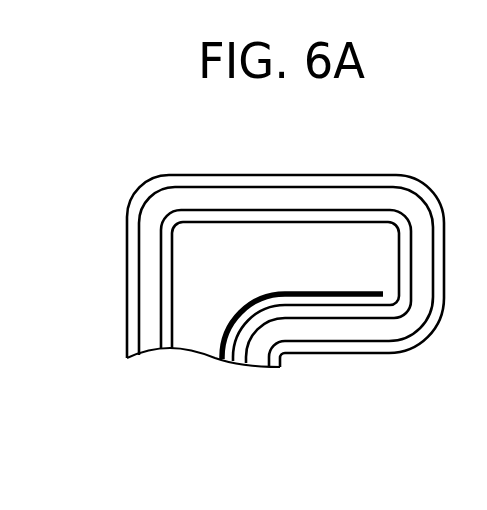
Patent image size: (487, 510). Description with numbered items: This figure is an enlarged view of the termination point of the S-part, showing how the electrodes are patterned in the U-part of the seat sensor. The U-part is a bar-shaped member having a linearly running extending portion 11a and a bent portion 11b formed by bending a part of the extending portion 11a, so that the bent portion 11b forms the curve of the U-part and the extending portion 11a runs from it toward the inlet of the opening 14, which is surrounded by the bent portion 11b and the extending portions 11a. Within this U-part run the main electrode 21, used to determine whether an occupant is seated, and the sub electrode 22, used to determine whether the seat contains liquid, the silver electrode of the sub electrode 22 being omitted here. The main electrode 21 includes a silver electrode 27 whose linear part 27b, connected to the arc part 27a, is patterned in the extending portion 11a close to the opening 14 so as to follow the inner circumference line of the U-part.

The opening 14 is at (260, 277).
The sub electrode 22 is at (155, 216).
The main electrode 21 is at (287, 253).
The extending portion 11a is at (311, 253).
The bent portion 11b is at (197, 340).
The silver electrode 27 is at (236, 245).
The arc part 27a is at (227, 327).
The linear part 27b is at (346, 292).